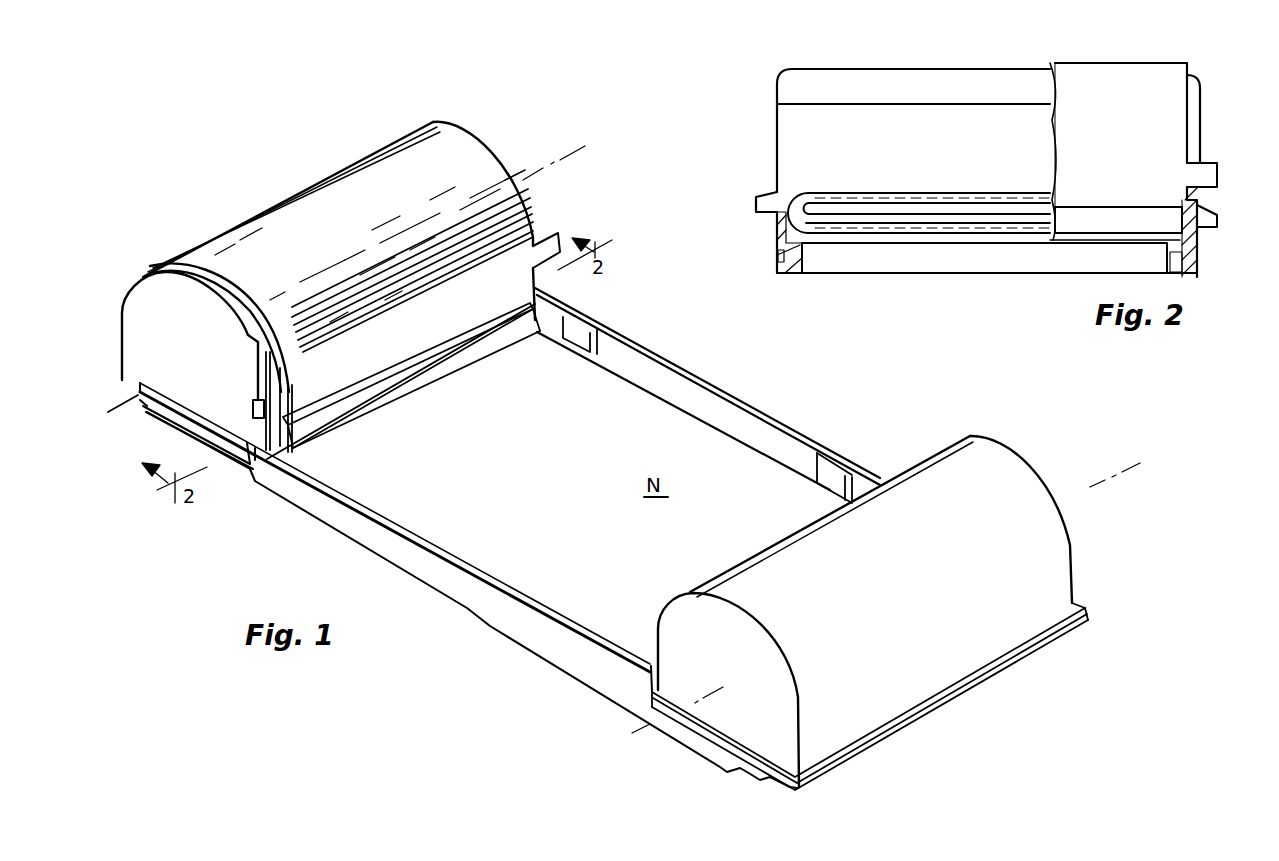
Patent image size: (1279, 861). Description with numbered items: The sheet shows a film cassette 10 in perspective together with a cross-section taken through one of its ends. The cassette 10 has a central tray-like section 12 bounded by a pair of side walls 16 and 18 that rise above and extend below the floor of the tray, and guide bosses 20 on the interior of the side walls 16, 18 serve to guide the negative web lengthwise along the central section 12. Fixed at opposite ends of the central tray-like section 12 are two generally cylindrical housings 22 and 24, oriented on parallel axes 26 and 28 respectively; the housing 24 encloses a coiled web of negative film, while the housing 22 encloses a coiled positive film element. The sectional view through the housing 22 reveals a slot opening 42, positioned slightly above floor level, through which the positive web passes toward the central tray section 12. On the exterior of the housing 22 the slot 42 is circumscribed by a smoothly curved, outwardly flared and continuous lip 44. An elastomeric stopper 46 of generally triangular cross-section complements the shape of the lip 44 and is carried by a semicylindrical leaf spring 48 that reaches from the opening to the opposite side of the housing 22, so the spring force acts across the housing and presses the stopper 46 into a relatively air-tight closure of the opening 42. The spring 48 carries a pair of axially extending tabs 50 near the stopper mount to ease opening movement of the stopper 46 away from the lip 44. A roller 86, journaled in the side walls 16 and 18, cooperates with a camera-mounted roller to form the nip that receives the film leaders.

In FIG. 1, the cassette 10 is at (1026, 432).
In FIG. 2, the cassette 10 is at (1214, 84).
In FIG. 1, the central tray-like section 12 is at (764, 406).
In FIG. 1, the side wall 16 is at (440, 572).
In FIG. 1, the side wall 18 is at (660, 370).
In FIG. 1, the guide bosses 20 is at (590, 330).
In FIG. 1, the housing 22 is at (182, 335).
In FIG. 2, the housing 22 is at (856, 138).
In FIG. 1, the housing 24 is at (934, 587).
In FIG. 1, the axis 26 is at (128, 407).
In FIG. 1, the axis 28 is at (1063, 490).
In FIG. 2, the slot opening 42 is at (867, 217).
In FIG. 2, the lip 44 is at (957, 203).
In FIG. 1, the elastomeric stopper 46 is at (418, 372).
In FIG. 2, the elastomeric stopper 46 is at (1108, 220).
In FIG. 1, the semicylindrical leaf spring 48 is at (460, 160).
In FIG. 2, the semicylindrical leaf spring 48 is at (1167, 143).
In FIG. 1, the tabs 50 is at (553, 238).
In FIG. 2, the tabs 50 is at (1205, 183).
In FIG. 2, the roller 86 is at (883, 257).